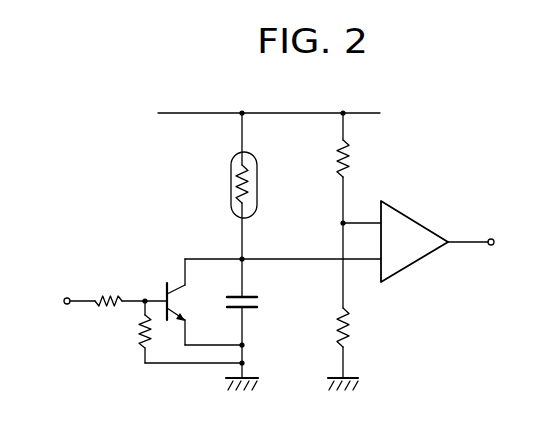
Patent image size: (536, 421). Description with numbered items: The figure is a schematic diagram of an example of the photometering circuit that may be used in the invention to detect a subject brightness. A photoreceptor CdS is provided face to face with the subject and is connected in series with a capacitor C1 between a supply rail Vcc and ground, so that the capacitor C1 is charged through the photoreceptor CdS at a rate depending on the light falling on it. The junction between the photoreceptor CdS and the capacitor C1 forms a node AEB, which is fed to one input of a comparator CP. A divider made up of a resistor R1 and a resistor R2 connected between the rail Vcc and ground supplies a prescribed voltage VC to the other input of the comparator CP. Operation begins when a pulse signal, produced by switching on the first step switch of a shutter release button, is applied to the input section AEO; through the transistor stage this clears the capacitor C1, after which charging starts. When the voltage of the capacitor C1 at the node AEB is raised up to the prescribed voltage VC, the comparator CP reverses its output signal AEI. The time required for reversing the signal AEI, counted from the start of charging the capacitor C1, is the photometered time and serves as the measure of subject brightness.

The supply voltage rail Vcc is at (249, 113).
The photoreceptor CdS is at (230, 185).
The resistor R1 is at (357, 168).
The resistor R2 is at (353, 306).
The prescribed voltage VC is at (335, 223).
The comparator CP is at (416, 252).
The signal AEI is at (471, 239).
The node / signal AEB is at (239, 257).
The AEO section AEO is at (106, 289).
The capacitor C1 is at (261, 302).